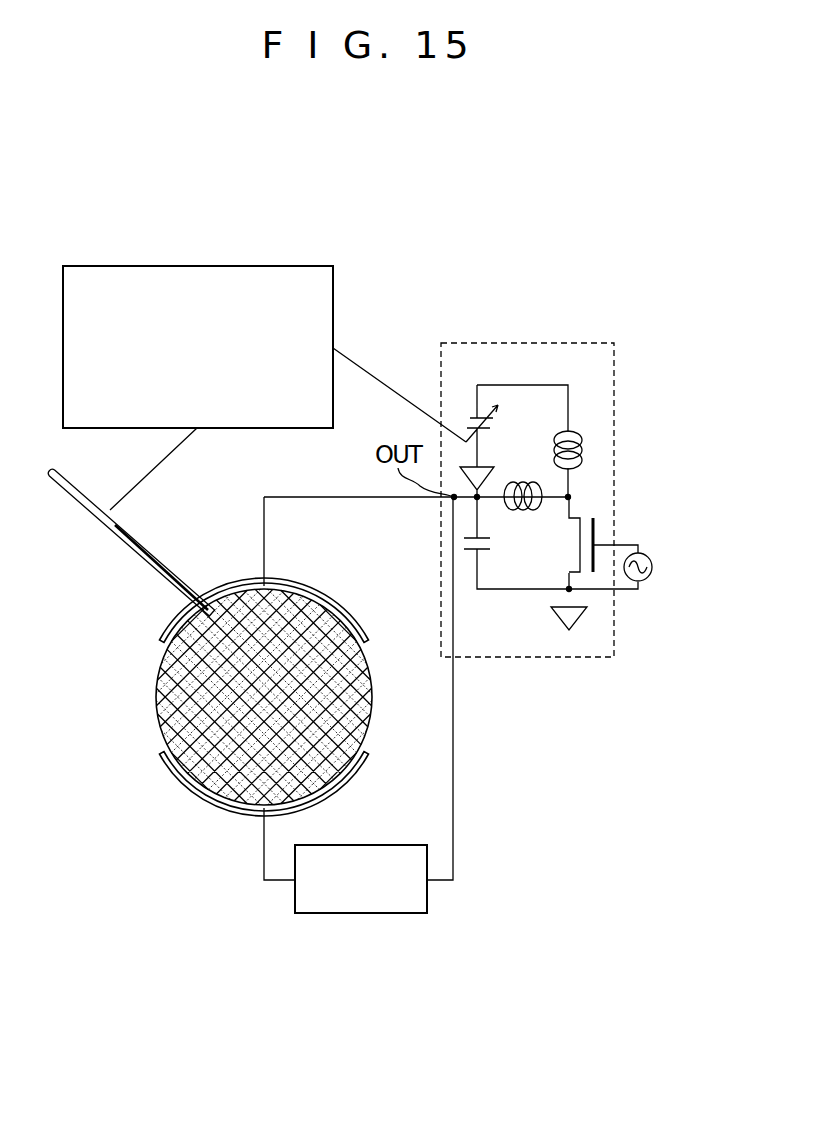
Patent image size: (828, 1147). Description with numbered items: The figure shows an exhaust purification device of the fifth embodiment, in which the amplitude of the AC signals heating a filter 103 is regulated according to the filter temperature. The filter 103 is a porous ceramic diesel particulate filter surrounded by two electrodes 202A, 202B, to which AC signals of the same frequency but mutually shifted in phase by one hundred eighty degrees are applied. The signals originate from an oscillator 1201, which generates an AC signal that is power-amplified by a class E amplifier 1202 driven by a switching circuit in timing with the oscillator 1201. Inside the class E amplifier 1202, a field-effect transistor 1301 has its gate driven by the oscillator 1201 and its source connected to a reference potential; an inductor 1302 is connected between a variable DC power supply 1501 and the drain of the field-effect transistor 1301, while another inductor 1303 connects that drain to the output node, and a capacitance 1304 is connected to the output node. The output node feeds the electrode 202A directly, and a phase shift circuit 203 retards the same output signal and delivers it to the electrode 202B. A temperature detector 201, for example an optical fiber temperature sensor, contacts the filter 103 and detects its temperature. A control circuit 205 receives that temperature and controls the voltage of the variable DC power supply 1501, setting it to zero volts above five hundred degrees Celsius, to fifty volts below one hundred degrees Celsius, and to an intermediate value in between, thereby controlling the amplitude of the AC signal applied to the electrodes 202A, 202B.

The control circuit 205 is at (210, 265).
The temperature detector 201 is at (63, 498).
The filter 103 is at (193, 707).
The electrode 202A is at (212, 593).
The electrode 202B is at (212, 803).
The phase shift circuit 203 is at (355, 915).
The class E amplifier 1202 is at (614, 370).
The variable DC power supply 1501 is at (475, 413).
The inductor 1303 is at (520, 480).
The inductor 1302 is at (583, 442).
The field-effect transistor 1301 is at (592, 510).
The oscillator 1201 is at (648, 556).
The capacitance 1304 is at (490, 552).